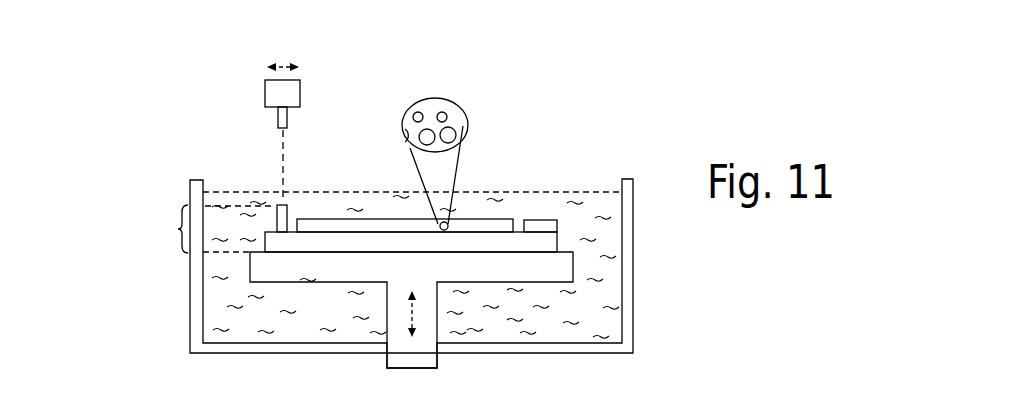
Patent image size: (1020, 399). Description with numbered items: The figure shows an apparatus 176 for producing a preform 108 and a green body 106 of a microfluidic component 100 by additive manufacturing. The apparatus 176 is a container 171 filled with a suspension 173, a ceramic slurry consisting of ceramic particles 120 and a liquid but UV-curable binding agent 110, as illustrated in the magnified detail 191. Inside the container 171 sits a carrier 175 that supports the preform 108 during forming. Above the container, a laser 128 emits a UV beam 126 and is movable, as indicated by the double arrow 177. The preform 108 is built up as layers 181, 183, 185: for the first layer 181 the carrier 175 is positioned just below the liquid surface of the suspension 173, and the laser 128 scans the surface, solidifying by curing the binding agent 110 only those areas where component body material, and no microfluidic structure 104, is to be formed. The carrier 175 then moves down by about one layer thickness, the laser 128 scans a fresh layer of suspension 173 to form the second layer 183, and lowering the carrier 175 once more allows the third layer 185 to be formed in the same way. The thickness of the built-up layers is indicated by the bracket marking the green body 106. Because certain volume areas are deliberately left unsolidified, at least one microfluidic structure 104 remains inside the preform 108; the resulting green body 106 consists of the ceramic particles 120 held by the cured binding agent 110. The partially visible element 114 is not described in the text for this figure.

The microfluidic component 100 is at (745, 398).
The microfluidic structure 104 is at (297, 225).
The green body 106 is at (201, 229).
The preform 108 is at (545, 236).
The binding agent 110 is at (450, 128).
The processing chamber 114 is at (42, 394).
The ceramic particles 120 is at (418, 114).
The UV beam 126 is at (283, 160).
The laser 128 is at (265, 93).
The container 171 is at (625, 289).
The suspension 173 is at (597, 208).
The carrier 175 is at (318, 268).
The apparatus 176 is at (649, 162).
The movability of the laser 177 is at (283, 62).
The first layer 181 is at (563, 242).
The second layer 183 is at (562, 226).
The third layer 185 is at (277, 205).
The detail 191 is at (407, 107).